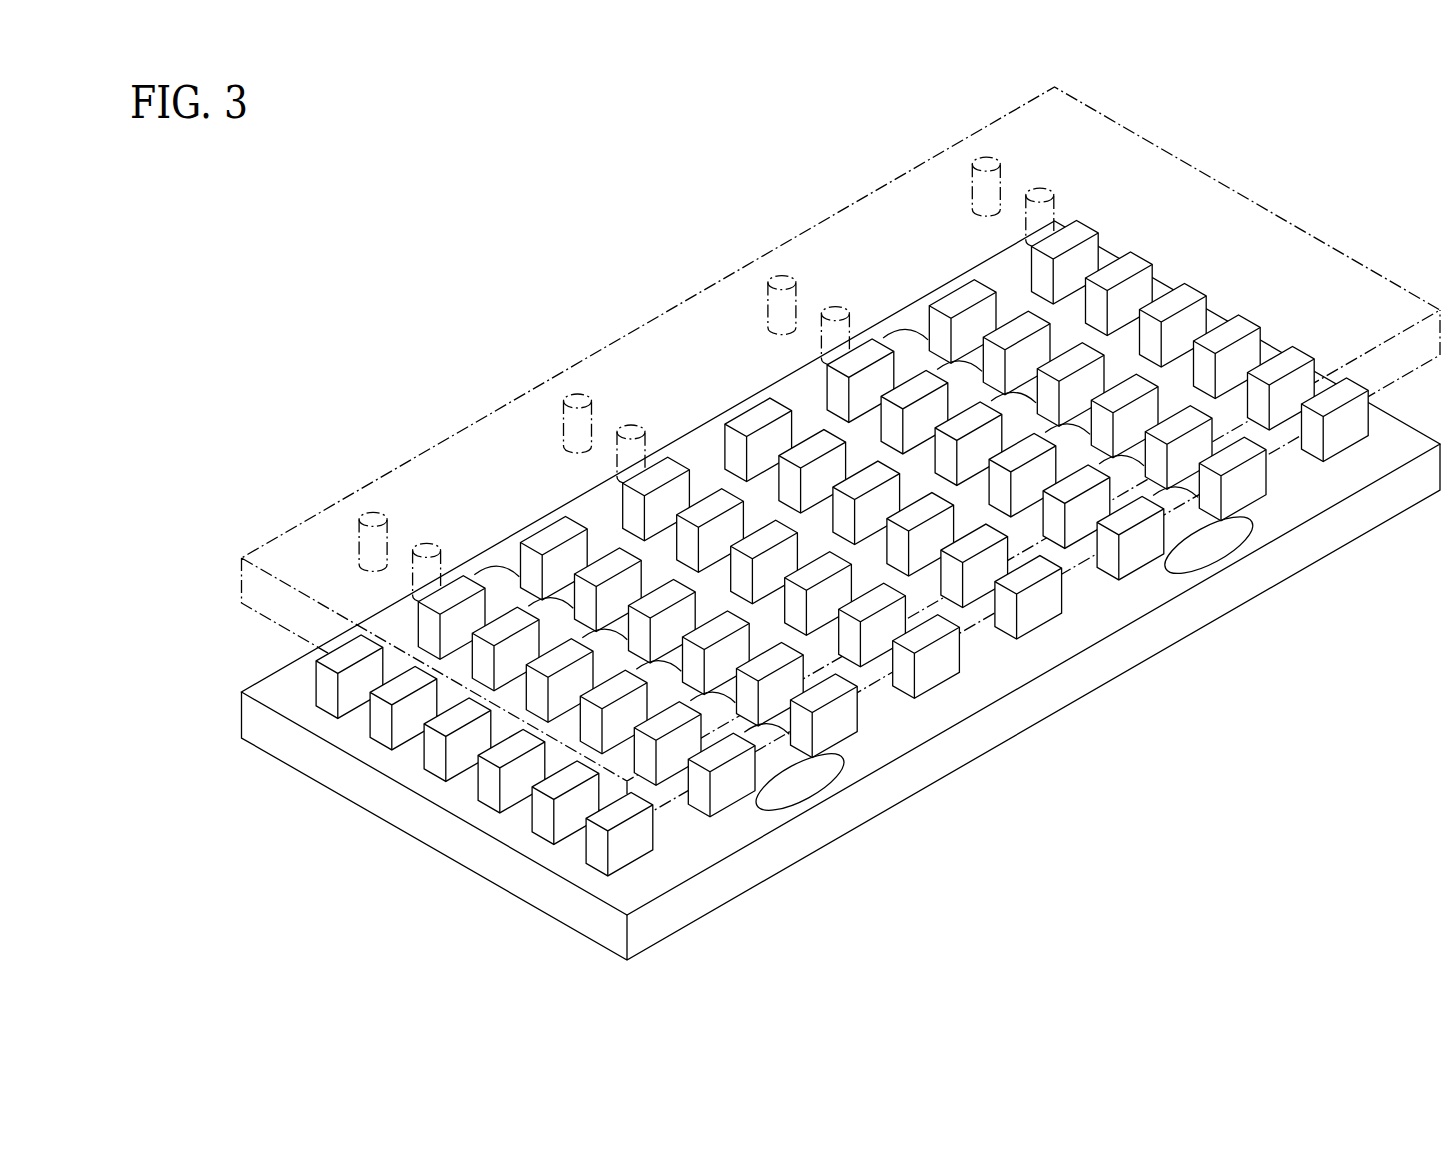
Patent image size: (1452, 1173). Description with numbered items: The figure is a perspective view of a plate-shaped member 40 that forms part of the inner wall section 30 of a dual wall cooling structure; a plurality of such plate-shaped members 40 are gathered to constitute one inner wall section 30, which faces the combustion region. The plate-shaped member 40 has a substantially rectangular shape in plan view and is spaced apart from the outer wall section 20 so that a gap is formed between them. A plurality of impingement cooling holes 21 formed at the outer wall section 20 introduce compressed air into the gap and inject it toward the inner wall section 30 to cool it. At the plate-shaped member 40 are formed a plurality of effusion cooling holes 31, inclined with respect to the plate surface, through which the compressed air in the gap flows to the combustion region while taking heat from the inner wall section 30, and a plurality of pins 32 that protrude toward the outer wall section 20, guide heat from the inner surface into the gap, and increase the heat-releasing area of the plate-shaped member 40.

The outer wall section 20 is at (686, 300).
The impingement cooling hole 21 is at (835, 308).
The inner wall section 30 is at (1212, 627).
The effusion cooling hole 31 is at (768, 733).
The pin 32 is at (985, 537).
The plate-shaped member 40 is at (1073, 688).